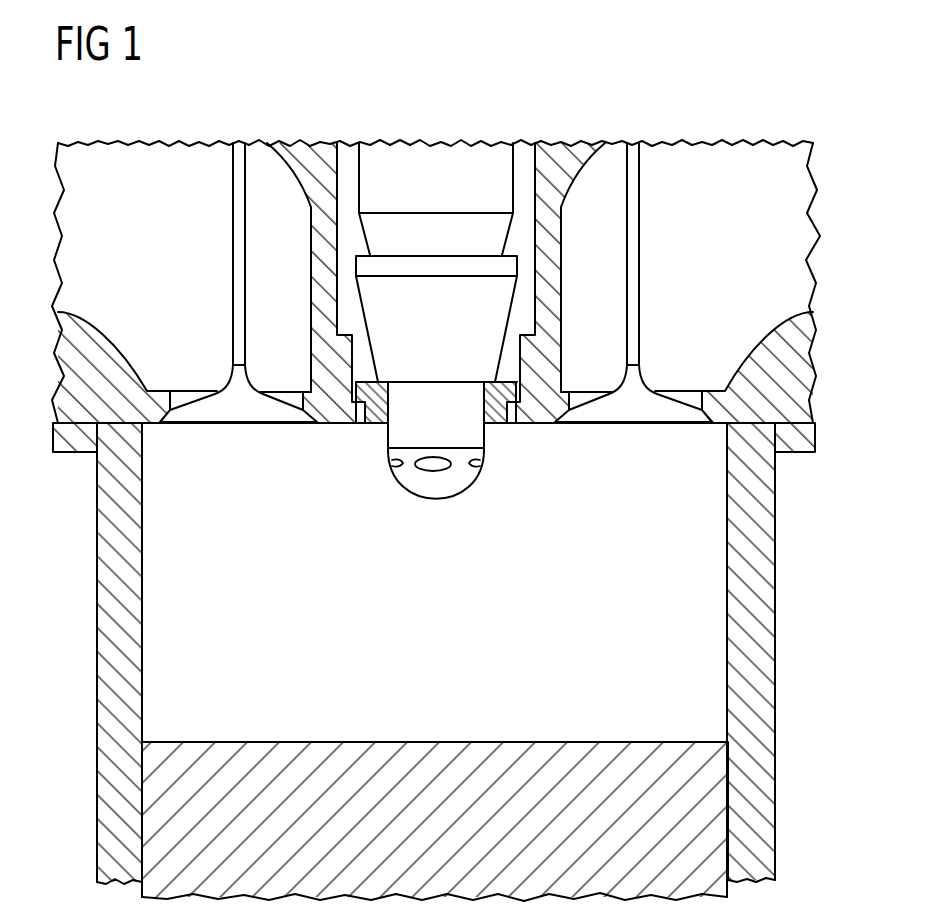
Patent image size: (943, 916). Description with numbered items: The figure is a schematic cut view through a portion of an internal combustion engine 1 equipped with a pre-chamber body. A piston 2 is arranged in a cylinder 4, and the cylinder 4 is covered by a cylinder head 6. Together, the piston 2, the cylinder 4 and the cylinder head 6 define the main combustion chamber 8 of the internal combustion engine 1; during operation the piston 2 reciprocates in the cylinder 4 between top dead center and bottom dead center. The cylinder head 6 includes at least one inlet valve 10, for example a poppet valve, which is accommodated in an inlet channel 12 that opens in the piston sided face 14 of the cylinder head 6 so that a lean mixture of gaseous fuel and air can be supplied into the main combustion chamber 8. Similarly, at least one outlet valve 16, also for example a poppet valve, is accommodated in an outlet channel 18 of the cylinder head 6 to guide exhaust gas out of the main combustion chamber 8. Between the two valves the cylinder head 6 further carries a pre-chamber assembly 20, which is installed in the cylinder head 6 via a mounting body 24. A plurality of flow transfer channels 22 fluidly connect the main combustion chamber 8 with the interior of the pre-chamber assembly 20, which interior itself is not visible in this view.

The internal combustion engine 1 is at (449, 113).
The piston 2 is at (577, 753).
The cylinder 4 is at (765, 640).
The cylinder head 6 is at (322, 152).
The main combustion chamber 8 is at (444, 649).
The inlet valve 10 is at (237, 412).
The inlet channel 12 is at (198, 162).
The piston sided face 14 is at (331, 429).
The outlet valve 16 is at (638, 412).
The outlet channel 18 is at (688, 157).
The pre-chamber assembly 20 is at (520, 277).
The flow transfer channels 22 is at (388, 458).
The mounting body 24 is at (503, 423).